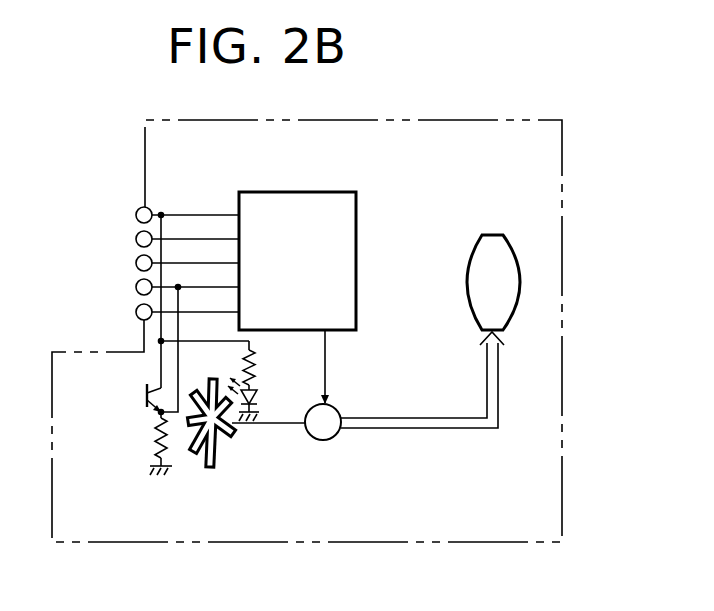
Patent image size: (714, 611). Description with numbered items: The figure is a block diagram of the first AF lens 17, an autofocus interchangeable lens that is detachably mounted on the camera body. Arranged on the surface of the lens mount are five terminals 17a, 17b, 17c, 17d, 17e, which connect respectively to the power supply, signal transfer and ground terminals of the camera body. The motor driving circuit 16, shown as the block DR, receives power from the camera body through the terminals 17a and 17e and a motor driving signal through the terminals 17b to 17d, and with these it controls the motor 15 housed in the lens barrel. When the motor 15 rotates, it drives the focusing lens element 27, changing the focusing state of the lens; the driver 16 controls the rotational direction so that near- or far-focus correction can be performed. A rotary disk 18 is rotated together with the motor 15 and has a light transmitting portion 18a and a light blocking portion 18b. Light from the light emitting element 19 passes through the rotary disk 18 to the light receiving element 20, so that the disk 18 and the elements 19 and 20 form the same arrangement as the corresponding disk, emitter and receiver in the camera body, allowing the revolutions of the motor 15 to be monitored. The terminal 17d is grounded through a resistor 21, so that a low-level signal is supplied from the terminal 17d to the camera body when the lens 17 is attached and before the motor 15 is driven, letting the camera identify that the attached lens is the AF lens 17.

The motor 15 is at (333, 440).
The motor driving circuit 16 is at (340, 325).
The first AF lens 17 is at (540, 120).
The terminal 17a is at (136, 213).
The terminal 17b is at (136, 239).
The terminal 17c is at (136, 263).
The terminal 17d is at (136, 287).
The terminal 17e is at (136, 313).
The rotary disk 18 is at (229, 441).
The light transmitting portion 18a is at (225, 450).
The light blocking portion 18b is at (210, 466).
The light emitting element 19 is at (256, 397).
The light receiving element 20 is at (147, 385).
The resistor 21 is at (153, 439).
The lens element 27 is at (478, 240).